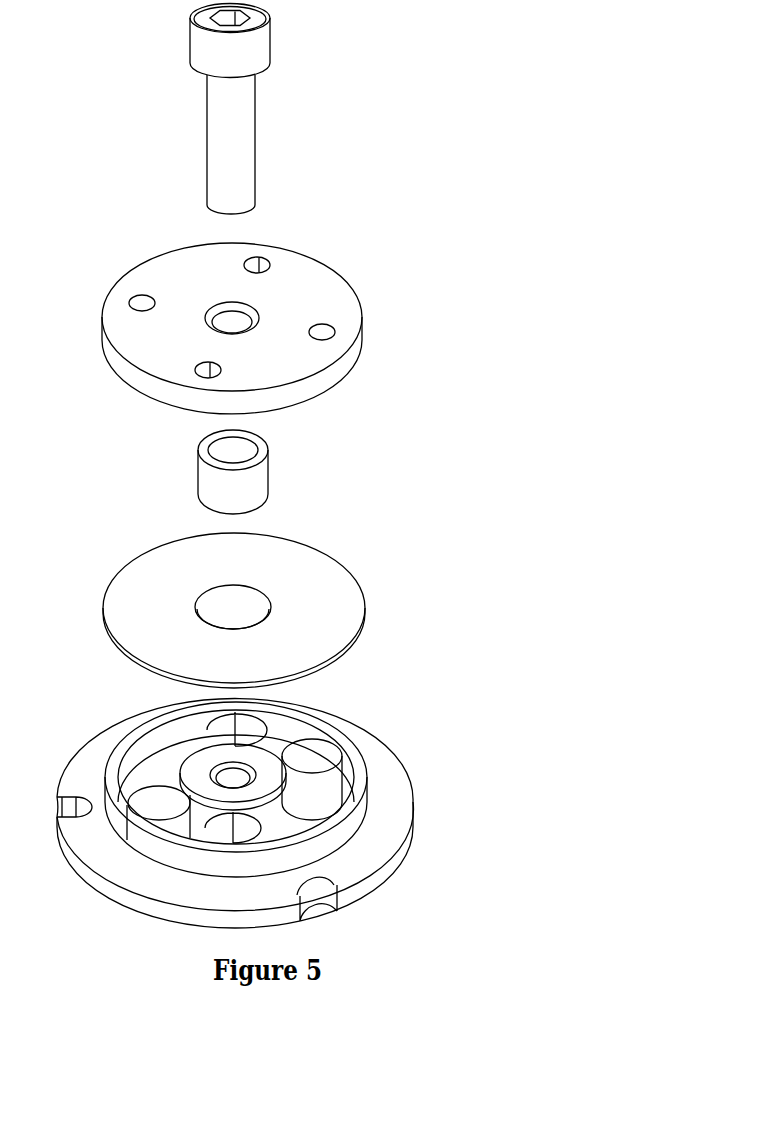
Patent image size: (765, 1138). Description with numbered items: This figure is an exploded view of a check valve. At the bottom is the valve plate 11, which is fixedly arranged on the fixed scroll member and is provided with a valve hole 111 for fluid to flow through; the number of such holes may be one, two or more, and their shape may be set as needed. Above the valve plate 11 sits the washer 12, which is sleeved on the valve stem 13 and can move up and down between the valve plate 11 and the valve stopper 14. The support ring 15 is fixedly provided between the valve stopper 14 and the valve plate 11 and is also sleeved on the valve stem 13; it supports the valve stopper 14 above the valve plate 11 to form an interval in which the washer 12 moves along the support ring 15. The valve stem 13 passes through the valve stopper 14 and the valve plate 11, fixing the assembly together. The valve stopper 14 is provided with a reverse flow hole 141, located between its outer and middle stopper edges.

The valve plate 11 is at (259, 795).
The valve hole 111 is at (314, 779).
The washer 12 is at (338, 608).
The valve stem 13 is at (237, 163).
The valve stopper 14 is at (224, 328).
The reverse flow hole 141 is at (143, 297).
The support ring 15 is at (255, 490).